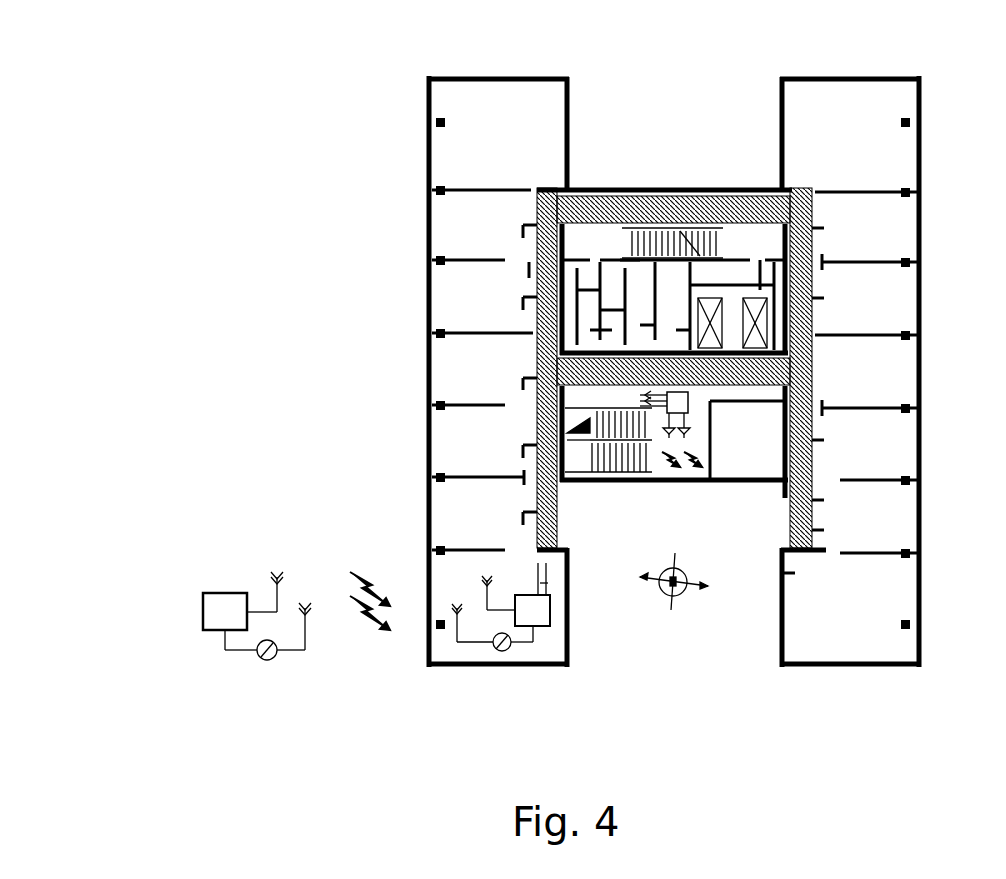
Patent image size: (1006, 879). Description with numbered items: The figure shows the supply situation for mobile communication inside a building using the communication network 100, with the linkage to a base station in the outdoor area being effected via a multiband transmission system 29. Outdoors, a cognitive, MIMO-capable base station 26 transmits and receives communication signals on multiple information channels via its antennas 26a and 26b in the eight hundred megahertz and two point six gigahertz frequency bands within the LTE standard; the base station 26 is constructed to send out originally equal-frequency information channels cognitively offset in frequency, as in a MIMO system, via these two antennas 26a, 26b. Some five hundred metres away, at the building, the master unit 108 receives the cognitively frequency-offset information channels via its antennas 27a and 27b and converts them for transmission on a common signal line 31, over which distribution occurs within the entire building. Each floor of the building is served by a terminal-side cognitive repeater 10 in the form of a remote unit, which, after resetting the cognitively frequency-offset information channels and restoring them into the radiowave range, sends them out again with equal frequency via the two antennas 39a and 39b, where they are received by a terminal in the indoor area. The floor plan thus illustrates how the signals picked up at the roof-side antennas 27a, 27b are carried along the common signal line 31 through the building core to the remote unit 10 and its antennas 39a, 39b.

The communication network 100 is at (131, 107).
The repeater, cognitive, terminal side 10 is at (690, 392).
The multiband transmission system 29 is at (905, 232).
The common signal line 31 is at (643, 393).
The antenna 39a is at (690, 420).
The antenna 39b is at (684, 425).
The master unit 108 is at (552, 610).
The antenna of the antenna receiver 27a is at (485, 598).
The antenna of the antenna receiver 27b is at (455, 625).
The base station, MIMO-capable 26 is at (203, 608).
The antenna of the MIMO-capable base station 26a is at (273, 597).
The antenna of the MIMO-capable base station 26b is at (307, 630).